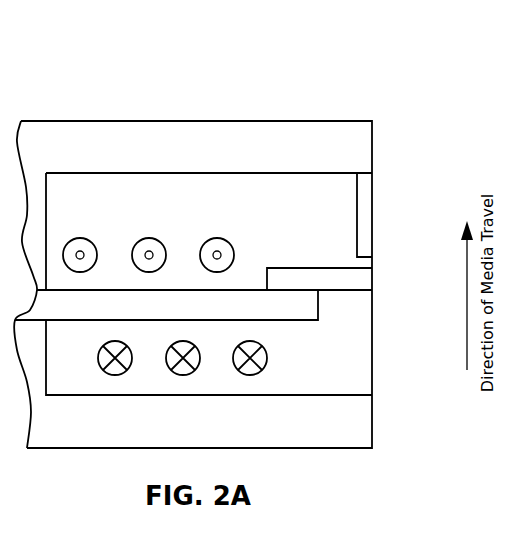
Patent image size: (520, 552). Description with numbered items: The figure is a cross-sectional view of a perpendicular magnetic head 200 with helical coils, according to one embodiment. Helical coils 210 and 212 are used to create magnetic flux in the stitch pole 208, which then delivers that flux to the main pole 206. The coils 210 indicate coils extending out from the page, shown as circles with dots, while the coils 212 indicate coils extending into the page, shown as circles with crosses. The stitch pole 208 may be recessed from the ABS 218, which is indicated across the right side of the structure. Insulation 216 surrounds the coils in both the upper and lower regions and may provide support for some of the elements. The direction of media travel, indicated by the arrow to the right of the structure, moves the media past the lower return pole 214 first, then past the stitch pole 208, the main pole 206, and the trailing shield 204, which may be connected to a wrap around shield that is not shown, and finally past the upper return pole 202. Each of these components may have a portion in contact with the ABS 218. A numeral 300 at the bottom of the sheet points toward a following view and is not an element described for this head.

The perpendicular magnetic head 200 is at (149, 97).
The upper return pole 202 is at (209, 154).
The trailing shield 204 is at (373, 218).
The main pole 206 is at (373, 275).
The stitch pole 208 is at (193, 305).
The helical coils (extending out from the page) 210 is at (78, 238).
The helical coils (extending into the page) 212 is at (98, 362).
The lower return pole 214 is at (209, 377).
The insulation 216 is at (318, 289).
The ABS 218 is at (379, 139).
The printing system (FIG. 3) 300 is at (89, 547).